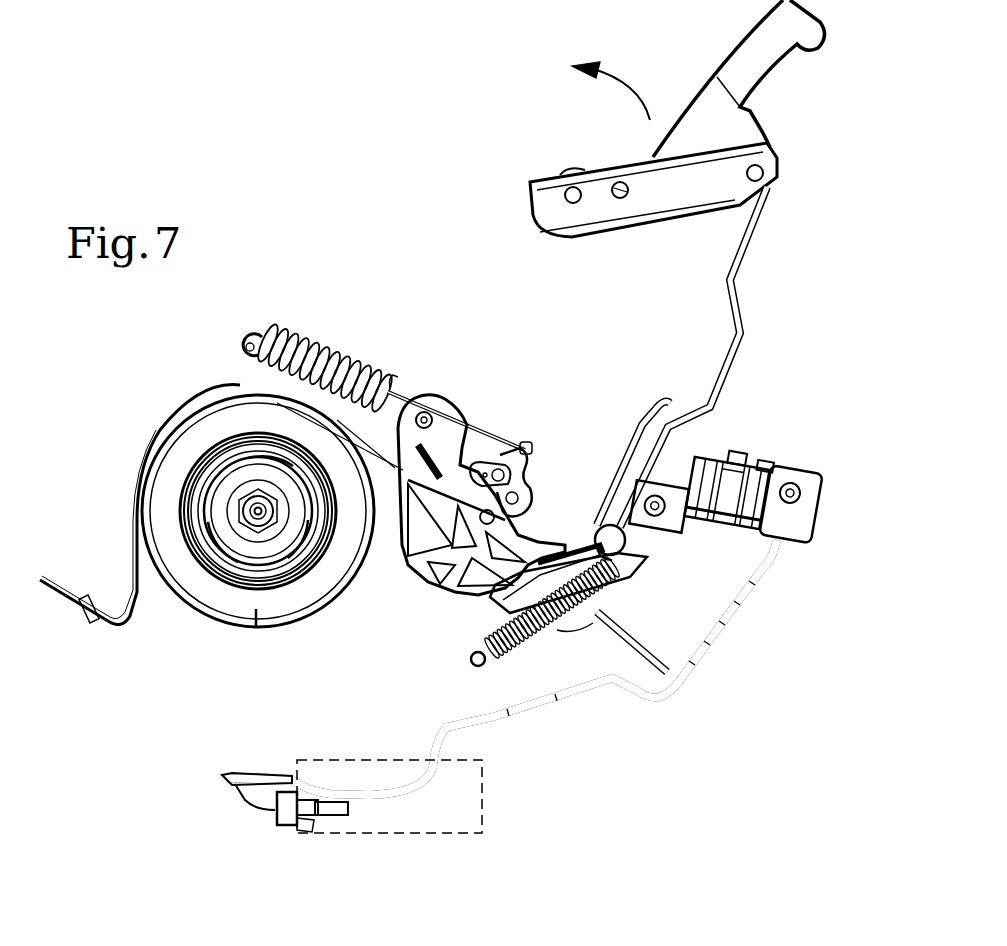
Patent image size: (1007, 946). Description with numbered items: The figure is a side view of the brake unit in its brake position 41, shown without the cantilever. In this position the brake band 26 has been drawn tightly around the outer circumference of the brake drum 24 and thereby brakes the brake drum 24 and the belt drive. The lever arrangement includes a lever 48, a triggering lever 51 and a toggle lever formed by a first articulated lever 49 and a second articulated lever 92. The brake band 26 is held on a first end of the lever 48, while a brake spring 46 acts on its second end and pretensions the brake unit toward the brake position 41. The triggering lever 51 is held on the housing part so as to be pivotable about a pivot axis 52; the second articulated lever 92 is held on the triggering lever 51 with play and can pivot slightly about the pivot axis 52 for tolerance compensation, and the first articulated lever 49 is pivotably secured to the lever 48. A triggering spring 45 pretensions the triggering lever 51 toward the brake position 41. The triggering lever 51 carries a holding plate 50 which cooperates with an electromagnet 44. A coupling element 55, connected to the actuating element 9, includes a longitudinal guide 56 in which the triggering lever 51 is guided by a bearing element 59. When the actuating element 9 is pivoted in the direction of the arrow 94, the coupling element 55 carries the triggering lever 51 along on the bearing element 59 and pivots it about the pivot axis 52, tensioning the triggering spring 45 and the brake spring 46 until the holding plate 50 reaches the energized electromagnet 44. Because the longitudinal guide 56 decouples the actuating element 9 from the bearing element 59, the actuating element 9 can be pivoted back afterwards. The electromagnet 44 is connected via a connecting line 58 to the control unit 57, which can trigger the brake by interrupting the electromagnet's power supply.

The actuating element 9 is at (734, 75).
The brake drum 24 is at (195, 432).
The brake band 26 is at (135, 562).
The brake position 41 is at (196, 8).
The electromagnet 44 is at (725, 497).
The triggering spring 45 is at (530, 597).
The brake spring 46 is at (320, 355).
The lever 48 is at (520, 487).
The first articulated lever 49 is at (491, 464).
The holding plate 50 is at (624, 640).
The triggering lever 51 is at (420, 575).
The pivot axis 52 is at (428, 414).
The coupling element 55 is at (738, 302).
The longitudinal guide 56 is at (625, 473).
The control unit 57 is at (482, 790).
The connecting line 58 is at (725, 636).
The bearing element 59 is at (617, 540).
The second articulated lever 92 is at (454, 446).
The arrow 94 is at (611, 91).